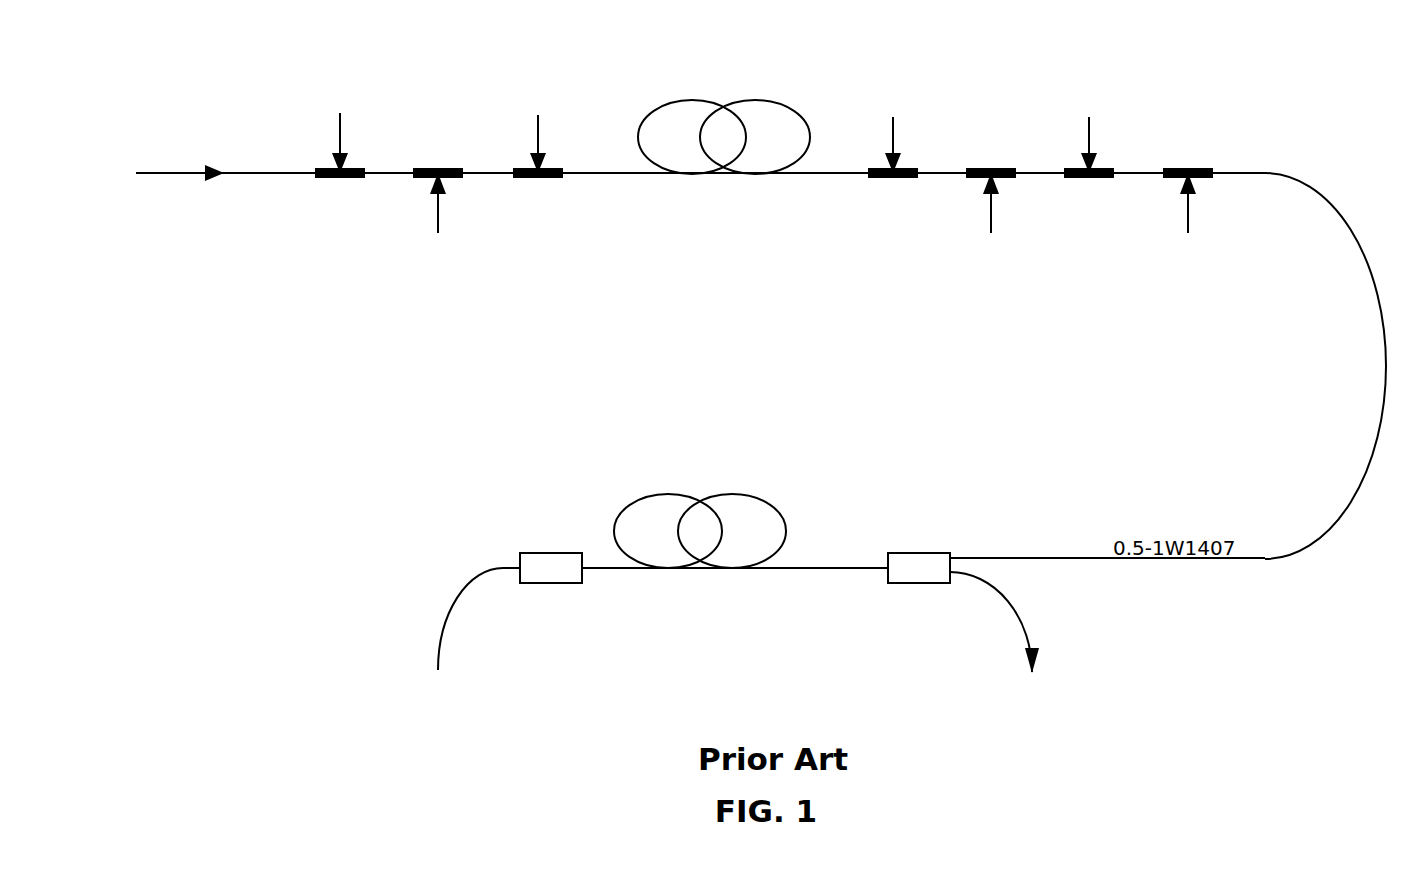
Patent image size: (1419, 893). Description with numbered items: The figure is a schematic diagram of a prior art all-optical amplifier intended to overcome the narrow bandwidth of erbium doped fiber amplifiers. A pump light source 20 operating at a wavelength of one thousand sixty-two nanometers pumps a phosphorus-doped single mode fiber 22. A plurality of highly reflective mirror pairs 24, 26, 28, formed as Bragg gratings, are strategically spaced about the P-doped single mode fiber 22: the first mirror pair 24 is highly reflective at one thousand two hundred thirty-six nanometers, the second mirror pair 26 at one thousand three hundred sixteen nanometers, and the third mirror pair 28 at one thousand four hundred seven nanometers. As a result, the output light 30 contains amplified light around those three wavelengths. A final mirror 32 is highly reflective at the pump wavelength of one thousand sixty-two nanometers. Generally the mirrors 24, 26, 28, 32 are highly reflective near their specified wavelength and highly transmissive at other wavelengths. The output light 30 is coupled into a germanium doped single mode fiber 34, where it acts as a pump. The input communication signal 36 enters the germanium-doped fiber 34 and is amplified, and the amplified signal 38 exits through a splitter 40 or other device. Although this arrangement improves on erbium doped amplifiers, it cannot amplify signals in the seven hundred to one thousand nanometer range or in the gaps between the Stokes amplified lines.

The pump light source 20 is at (170, 176).
The P-doped single mode fiber 22 is at (776, 104).
The first highly reflective mirror pair 24 is at (338, 178).
The second highly reflective mirror pair 26 is at (439, 169).
The third highly reflective mirror pair 28 is at (536, 178).
The output light 30 is at (1366, 254).
The final mirror 32 is at (1190, 169).
The germanium doped single mode fiber 34 is at (785, 519).
The input communication signal 36 is at (477, 582).
The amplified signal 38 is at (1018, 612).
The splitter 40 is at (928, 552).